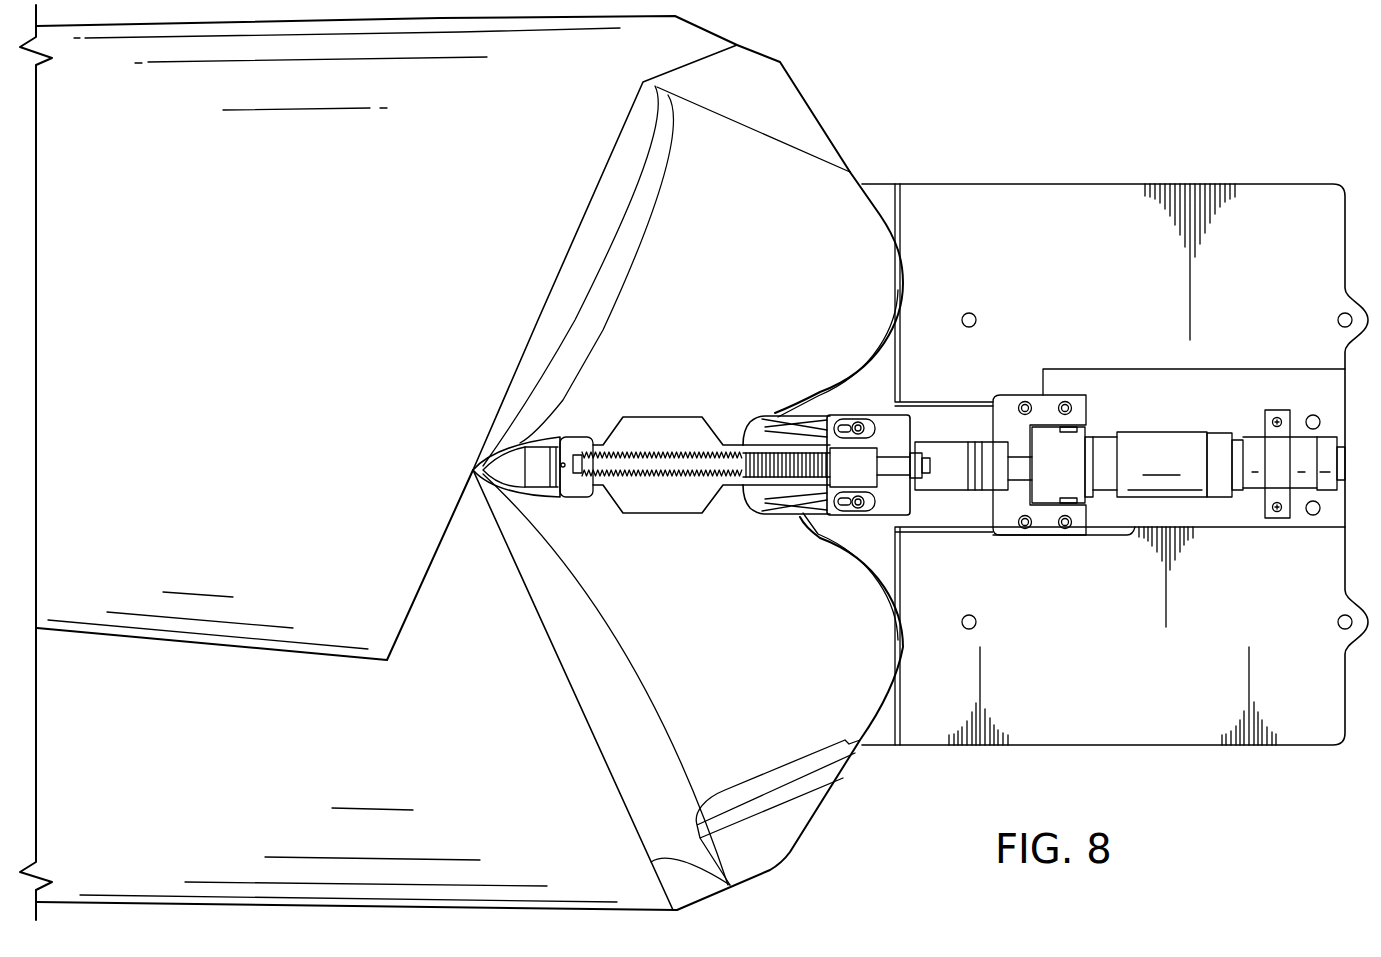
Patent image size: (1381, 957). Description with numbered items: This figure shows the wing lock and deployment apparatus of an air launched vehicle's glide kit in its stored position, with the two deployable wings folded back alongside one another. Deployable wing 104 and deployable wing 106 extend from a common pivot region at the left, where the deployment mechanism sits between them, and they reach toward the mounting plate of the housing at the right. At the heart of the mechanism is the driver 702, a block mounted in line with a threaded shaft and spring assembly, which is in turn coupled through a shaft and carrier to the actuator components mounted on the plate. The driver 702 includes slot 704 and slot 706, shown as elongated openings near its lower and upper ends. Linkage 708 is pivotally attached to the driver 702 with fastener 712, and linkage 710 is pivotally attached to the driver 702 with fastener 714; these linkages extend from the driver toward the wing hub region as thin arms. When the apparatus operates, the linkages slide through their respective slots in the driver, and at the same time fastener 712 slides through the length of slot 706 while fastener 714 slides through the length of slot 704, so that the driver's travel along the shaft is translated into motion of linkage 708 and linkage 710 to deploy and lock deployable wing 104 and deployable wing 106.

The deployable wing 104 is at (255, 777).
The deployable wing 106 is at (255, 264).
The driver 702 is at (902, 497).
The slot 704 is at (845, 507).
The slot 706 is at (845, 424).
The linkage 708 is at (768, 422).
The linkage 710 is at (768, 508).
The fastener 712 is at (860, 413).
The fastener 714 is at (885, 540).